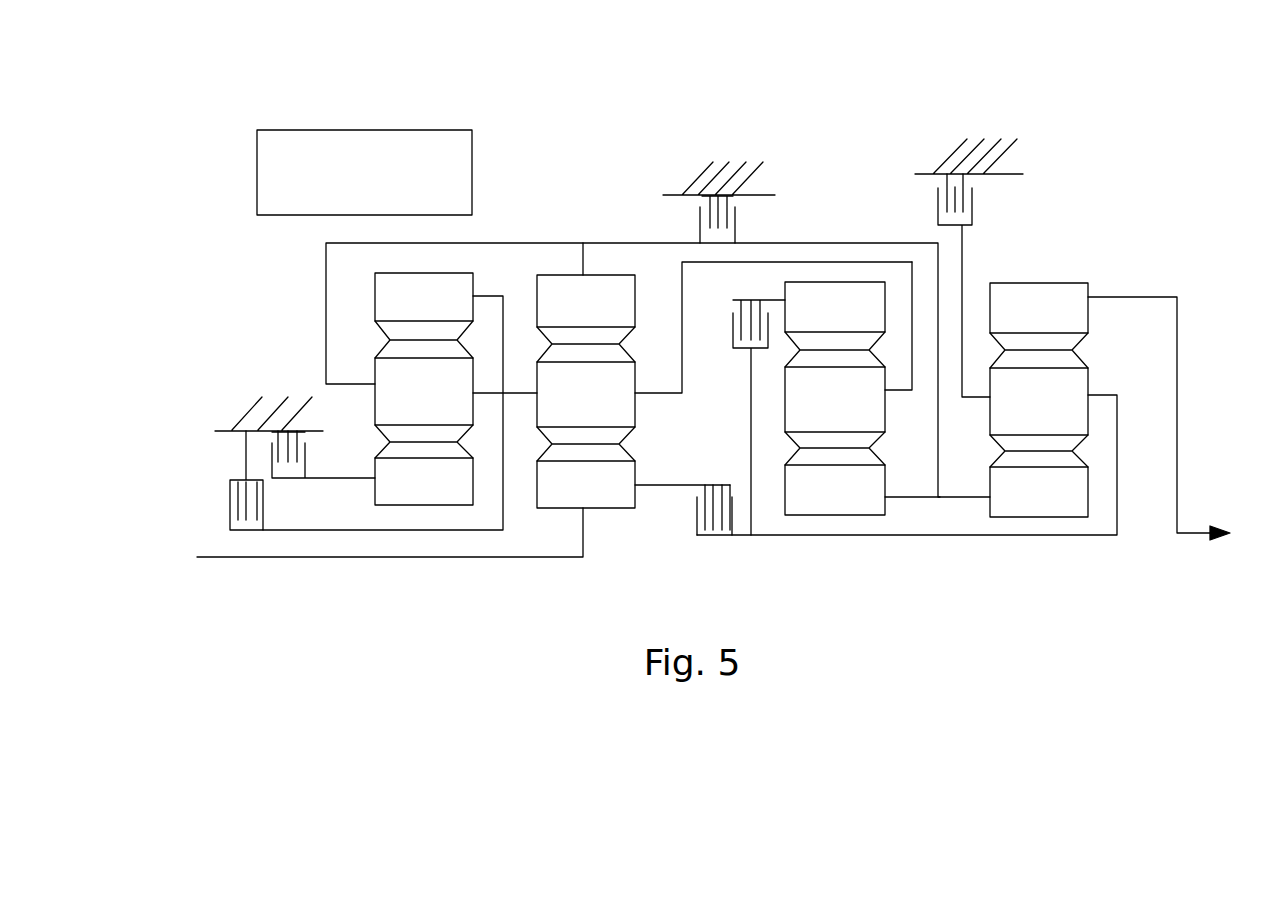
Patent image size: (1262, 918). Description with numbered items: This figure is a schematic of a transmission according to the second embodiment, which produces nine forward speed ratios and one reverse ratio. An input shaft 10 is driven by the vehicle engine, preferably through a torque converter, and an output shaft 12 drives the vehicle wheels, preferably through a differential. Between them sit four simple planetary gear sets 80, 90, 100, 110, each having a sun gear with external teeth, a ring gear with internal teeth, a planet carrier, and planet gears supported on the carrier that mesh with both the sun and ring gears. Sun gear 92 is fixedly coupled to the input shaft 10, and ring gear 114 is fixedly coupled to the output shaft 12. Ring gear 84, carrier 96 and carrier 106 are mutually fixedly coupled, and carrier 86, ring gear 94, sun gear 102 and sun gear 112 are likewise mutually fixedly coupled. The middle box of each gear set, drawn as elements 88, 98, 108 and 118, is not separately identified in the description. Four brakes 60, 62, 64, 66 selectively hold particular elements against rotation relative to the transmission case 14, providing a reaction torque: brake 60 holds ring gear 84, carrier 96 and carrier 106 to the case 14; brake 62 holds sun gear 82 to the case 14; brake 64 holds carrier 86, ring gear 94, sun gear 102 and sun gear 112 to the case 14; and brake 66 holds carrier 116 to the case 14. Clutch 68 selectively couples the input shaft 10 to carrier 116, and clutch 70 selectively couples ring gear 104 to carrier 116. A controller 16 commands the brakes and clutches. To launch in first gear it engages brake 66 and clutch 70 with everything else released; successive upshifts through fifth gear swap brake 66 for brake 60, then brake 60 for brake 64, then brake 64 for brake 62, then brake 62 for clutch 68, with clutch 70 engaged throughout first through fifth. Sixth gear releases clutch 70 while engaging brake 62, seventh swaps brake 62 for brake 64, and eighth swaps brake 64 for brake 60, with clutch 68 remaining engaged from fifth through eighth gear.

The input shaft 10 is at (267, 553).
The output shaft 12 is at (1193, 528).
The transmission case 14 is at (245, 410).
The controller 16 is at (355, 130).
The brake 60 is at (230, 508).
The brake 62 is at (305, 462).
The brake 64 is at (735, 222).
The brake 66 is at (972, 210).
The clutch 68 is at (710, 535).
The clutch 70 is at (733, 348).
The simple planetary gear set 80 is at (424, 437).
The sun gear 82 is at (411, 492).
The ring gear 84 is at (424, 297).
The carrier 86 is at (348, 383).
The planet carrier 88 is at (411, 402).
The simple planetary gear set 90 is at (586, 438).
The sun gear 92 is at (586, 484).
The ring gear 94 is at (573, 312).
The carrier 96 is at (663, 395).
The planet carrier 98 is at (586, 394).
The simple planetary gear set 100 is at (835, 440).
The sun gear 102 is at (822, 501).
The ring gear 104 is at (822, 318).
The carrier 106 is at (887, 392).
The planet carrier 108 is at (835, 399).
The simple planetary gear set 110 is at (1039, 441).
The sun gear 112 is at (1026, 503).
The ring gear 114 is at (1026, 319).
The carrier 116 is at (1103, 392).
The planet carrier 118 is at (1039, 401).